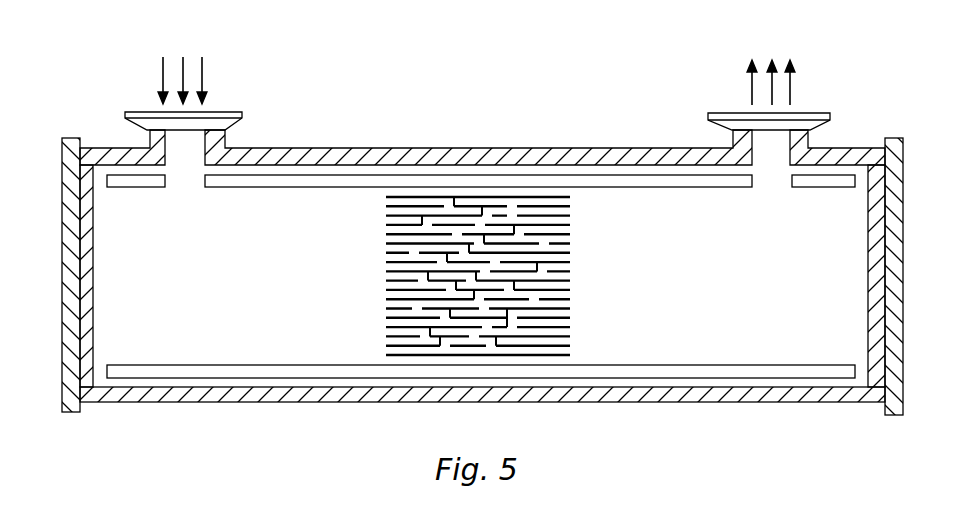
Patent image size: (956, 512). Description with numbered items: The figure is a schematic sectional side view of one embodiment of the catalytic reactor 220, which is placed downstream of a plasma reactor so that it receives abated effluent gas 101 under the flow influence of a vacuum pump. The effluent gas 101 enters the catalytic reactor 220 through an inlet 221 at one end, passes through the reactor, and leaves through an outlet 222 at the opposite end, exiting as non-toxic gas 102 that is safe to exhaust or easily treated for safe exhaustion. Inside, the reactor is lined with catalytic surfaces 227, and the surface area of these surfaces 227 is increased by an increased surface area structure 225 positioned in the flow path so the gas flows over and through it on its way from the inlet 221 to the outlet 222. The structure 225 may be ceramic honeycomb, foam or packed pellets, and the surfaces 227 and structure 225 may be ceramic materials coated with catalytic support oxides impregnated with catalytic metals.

The catalytic reactor 220 is at (791, 252).
The inlet 221 is at (141, 144).
The outlet 222 is at (819, 145).
The abated effluent gas 101 is at (204, 74).
The non-toxic gas 102 is at (793, 98).
The increased surface area structure 225 is at (568, 276).
The catalytic surfaces 227 is at (386, 205).